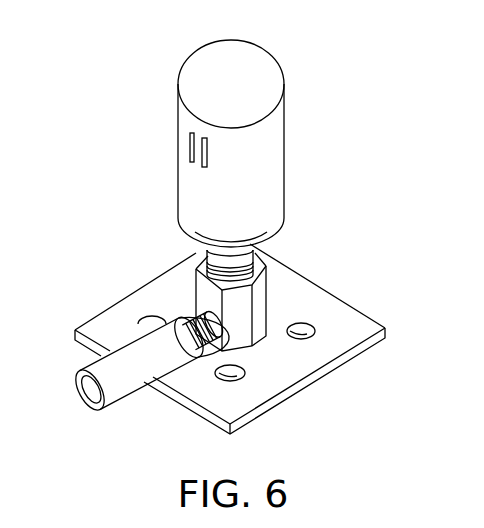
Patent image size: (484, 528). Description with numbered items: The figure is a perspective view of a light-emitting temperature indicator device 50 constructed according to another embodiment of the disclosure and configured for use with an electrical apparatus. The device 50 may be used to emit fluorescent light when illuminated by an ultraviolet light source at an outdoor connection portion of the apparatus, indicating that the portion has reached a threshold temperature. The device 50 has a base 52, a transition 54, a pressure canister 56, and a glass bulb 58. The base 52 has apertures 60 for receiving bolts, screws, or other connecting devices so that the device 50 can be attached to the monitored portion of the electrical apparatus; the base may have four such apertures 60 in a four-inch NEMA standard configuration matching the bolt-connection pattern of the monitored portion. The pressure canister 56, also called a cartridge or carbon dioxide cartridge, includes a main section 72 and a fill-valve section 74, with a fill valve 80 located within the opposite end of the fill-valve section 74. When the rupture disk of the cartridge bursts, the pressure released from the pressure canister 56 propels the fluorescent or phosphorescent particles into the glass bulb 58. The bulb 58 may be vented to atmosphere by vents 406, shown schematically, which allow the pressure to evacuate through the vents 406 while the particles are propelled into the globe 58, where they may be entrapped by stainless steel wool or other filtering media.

The light-emitting temperature indicator device 50 is at (356, 193).
The base 52 is at (328, 310).
The transition 54 is at (258, 293).
The pressure canister 56 is at (128, 380).
The glass bulb 58 is at (267, 77).
The apertures 60 is at (153, 320).
The main section 72 is at (133, 344).
The fill-valve section 74 is at (97, 365).
The fill valve 80 is at (87, 393).
The vents 406 is at (191, 151).